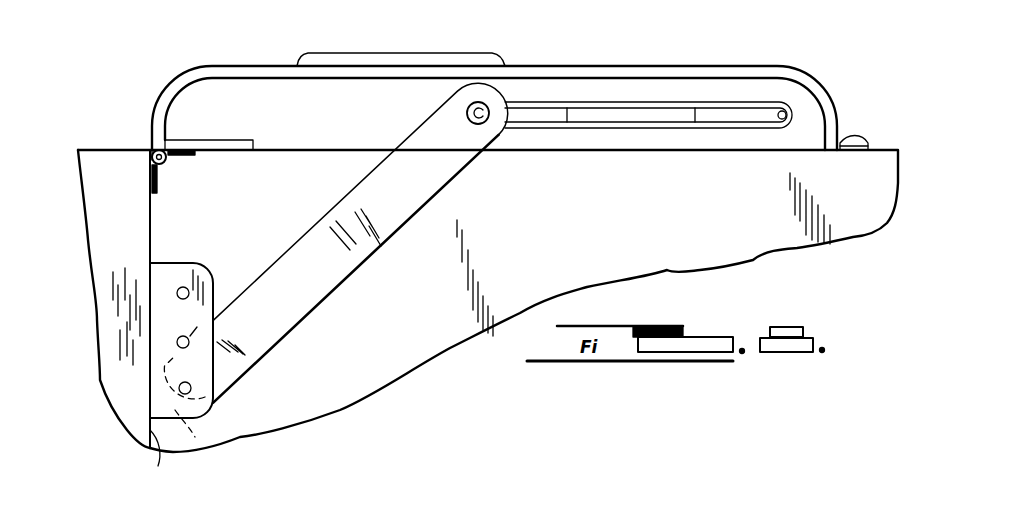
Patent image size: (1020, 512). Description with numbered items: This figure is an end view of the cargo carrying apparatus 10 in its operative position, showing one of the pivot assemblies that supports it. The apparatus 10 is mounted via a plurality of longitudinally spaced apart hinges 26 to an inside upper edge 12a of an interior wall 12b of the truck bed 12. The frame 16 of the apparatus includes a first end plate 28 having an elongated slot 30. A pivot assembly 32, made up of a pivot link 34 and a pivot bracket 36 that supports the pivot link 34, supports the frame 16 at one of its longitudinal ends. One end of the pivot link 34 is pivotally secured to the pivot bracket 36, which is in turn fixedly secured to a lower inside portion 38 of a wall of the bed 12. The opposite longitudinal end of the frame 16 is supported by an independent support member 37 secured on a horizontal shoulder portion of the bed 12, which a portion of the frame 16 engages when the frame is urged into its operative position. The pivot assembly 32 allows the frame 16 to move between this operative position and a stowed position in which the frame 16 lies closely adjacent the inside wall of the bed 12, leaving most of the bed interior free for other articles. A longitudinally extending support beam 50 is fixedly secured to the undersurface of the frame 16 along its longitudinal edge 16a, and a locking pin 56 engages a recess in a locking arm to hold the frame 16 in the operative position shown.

The apparatus 10 is at (133, 78).
The bed 12 is at (77, 150).
The inside upper edge 12a is at (150, 147).
The interior wall 12b is at (157, 208).
The frame 16 is at (807, 74).
The longitudinal edge 16a is at (167, 155).
The hinges 26 is at (172, 180).
The first end plate 28 is at (587, 150).
The elongated slot 30 is at (735, 116).
The pivot assembly 32 is at (240, 400).
The pivot link 34 is at (313, 265).
The pivot bracket 36 is at (195, 437).
The independent support member 37 is at (884, 136).
The lower inside portion 38 is at (151, 465).
The support beam 50 is at (235, 147).
The locking pin 56 is at (467, 116).